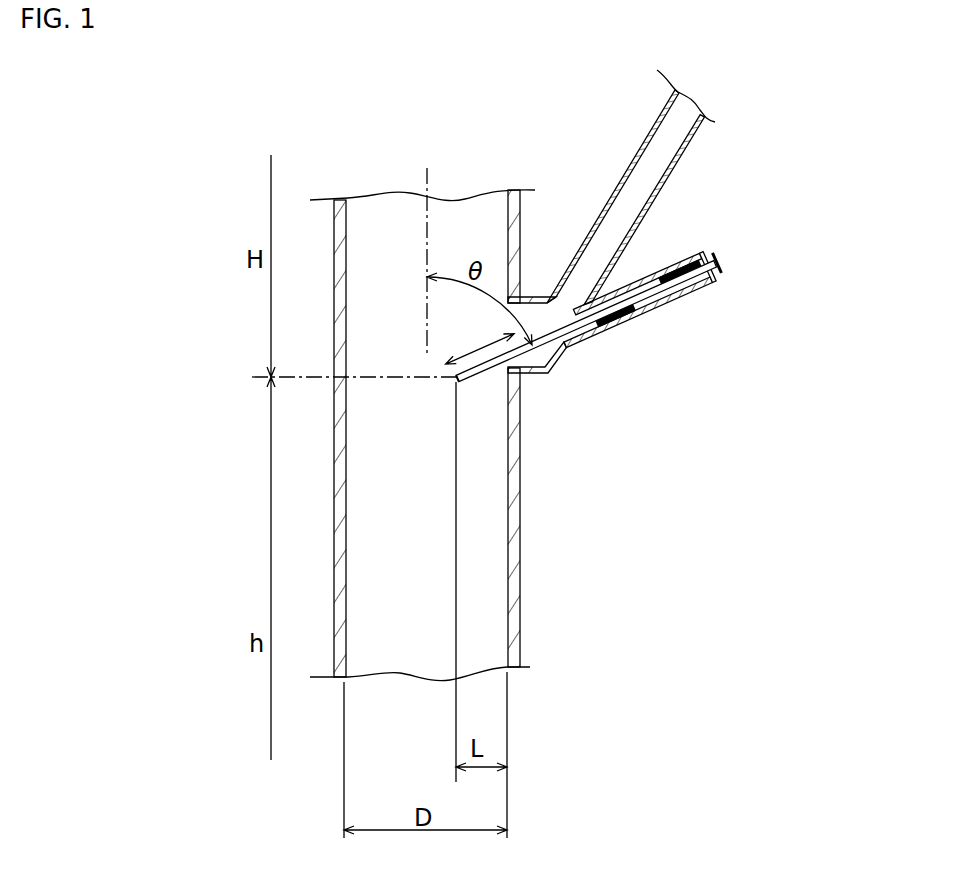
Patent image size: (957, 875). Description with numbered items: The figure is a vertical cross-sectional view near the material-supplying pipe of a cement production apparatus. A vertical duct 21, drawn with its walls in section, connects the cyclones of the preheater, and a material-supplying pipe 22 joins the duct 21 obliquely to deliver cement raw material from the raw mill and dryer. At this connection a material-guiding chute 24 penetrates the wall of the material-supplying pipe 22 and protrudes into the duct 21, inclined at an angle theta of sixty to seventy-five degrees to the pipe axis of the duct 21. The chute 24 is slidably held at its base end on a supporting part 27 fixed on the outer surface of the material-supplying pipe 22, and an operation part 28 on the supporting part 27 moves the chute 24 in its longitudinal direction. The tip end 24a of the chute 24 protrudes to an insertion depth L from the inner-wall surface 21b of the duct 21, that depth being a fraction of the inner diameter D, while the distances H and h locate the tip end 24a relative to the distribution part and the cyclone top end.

The duct 21 is at (485, 424).
The inner-wall surface 21b is at (508, 553).
The material-supplying pipe 22 is at (670, 175).
The material-guiding chute 24 is at (541, 362).
The tip end 24a is at (490, 367).
The supporting part 27 is at (672, 300).
The operation part 28 is at (719, 272).